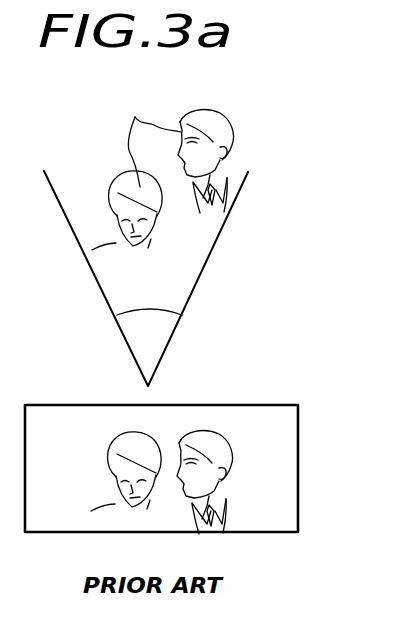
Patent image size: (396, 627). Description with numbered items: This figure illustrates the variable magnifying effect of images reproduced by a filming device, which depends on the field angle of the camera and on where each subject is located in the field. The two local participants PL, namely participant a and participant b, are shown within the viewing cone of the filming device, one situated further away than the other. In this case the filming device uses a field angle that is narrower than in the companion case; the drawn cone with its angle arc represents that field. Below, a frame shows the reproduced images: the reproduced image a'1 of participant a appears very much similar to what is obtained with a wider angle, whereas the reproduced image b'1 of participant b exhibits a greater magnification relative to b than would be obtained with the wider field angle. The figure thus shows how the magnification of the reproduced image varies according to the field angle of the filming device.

The local participants PL is at (150, 137).
The local participant a is at (127, 206).
The local participant b is at (212, 150).
The reproduced image of a a'1 is at (105, 468).
The reproduced image of b b'1 is at (229, 482).